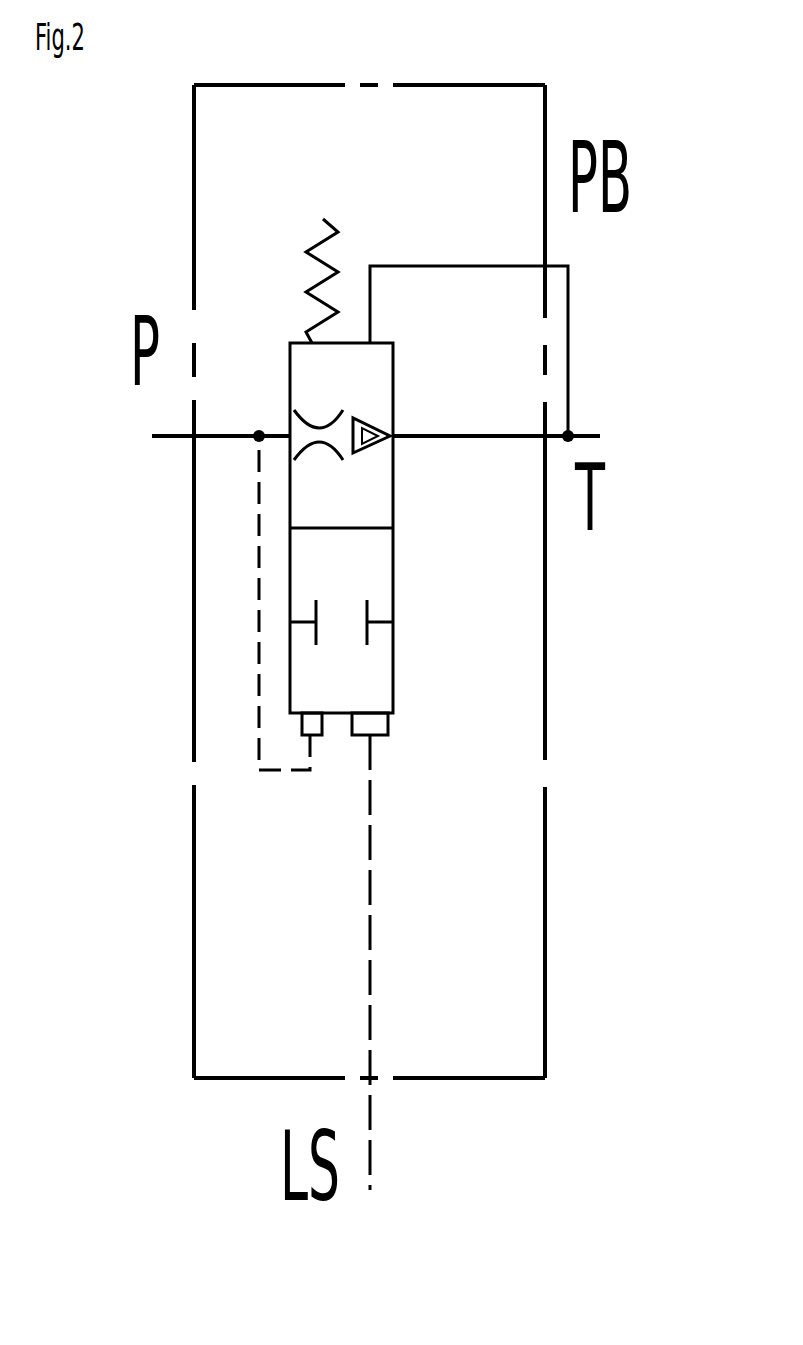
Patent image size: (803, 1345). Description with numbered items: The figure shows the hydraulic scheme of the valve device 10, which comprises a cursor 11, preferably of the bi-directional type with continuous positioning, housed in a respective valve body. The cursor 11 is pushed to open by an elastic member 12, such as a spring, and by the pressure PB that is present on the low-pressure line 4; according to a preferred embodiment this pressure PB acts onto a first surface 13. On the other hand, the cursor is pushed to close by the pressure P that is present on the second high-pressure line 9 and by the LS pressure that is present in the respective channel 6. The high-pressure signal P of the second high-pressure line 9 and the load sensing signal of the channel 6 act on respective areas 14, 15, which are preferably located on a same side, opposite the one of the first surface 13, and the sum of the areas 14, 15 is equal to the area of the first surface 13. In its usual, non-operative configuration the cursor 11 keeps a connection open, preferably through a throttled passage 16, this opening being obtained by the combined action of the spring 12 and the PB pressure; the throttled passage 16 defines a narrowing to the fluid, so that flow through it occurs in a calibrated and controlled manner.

The low-pressure line 4 is at (511, 434).
The channel 6 is at (379, 962).
The second high-pressure line 9 is at (196, 439).
The valve device 10 is at (510, 673).
The cursor 11 is at (385, 538).
The elastic member 12 is at (210, 95).
The first surface 13 is at (469, 351).
The area 14 is at (290, 603).
The area 15 is at (369, 701).
The throttled passage 16 is at (320, 428).